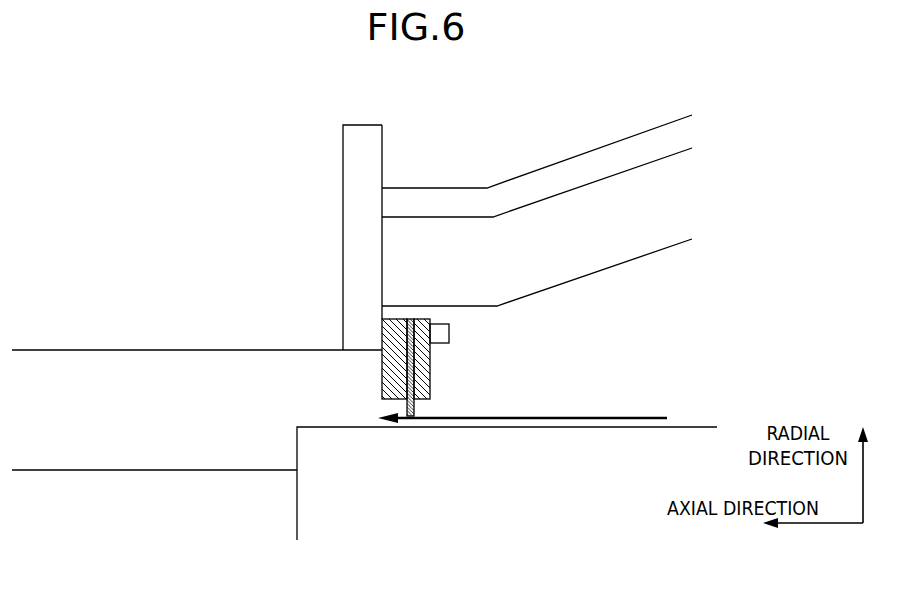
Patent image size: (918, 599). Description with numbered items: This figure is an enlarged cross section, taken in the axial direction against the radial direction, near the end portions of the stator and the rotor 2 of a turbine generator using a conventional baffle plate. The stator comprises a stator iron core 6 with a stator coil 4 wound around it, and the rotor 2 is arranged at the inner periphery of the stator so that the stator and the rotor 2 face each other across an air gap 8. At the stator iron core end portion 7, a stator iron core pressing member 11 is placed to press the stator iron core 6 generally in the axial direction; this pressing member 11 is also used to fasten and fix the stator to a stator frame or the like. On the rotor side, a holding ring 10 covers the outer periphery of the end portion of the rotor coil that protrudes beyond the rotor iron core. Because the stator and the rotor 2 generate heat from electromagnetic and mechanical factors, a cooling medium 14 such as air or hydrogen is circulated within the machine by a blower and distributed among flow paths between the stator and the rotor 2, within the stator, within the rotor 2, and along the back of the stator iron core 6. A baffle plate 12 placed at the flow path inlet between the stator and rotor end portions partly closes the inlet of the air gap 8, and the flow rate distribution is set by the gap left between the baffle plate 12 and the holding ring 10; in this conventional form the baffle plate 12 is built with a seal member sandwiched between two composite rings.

The rotor 2 is at (367, 476).
The stator coil 4 is at (632, 209).
The stator iron core 6 is at (183, 147).
The stator iron core end portion 7 is at (327, 147).
The air gap 8 is at (237, 458).
The holding ring 10 is at (687, 428).
The stator iron core pressing member 11 is at (364, 147).
The baffle plate 12 is at (427, 367).
The cooling medium 14 is at (615, 418).